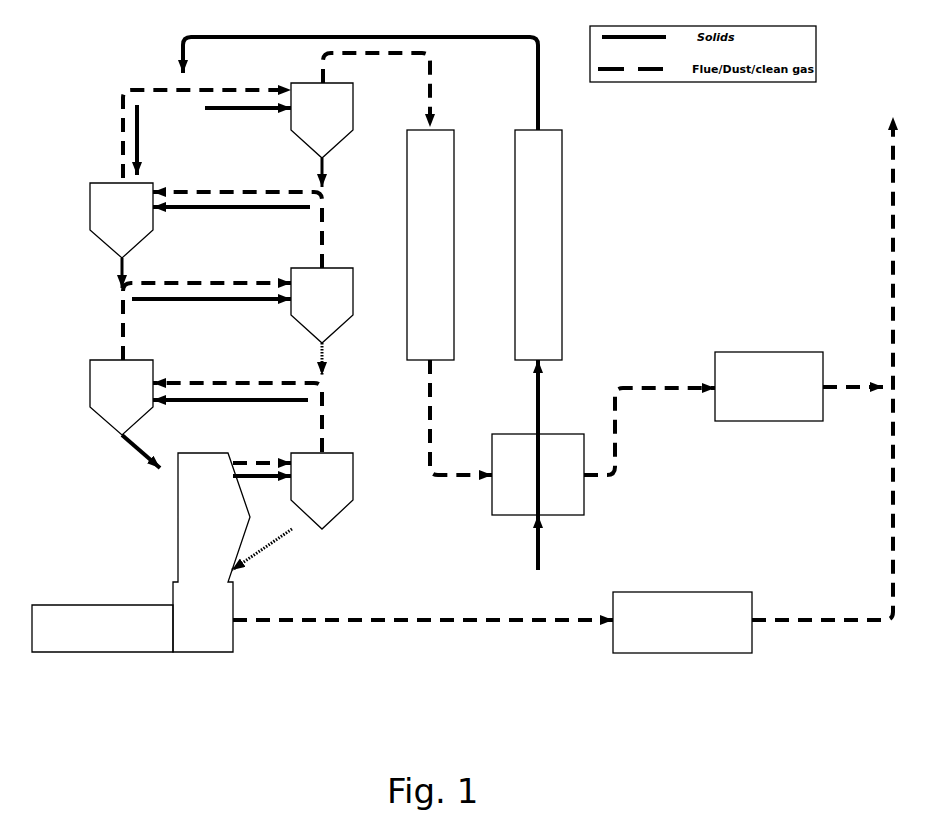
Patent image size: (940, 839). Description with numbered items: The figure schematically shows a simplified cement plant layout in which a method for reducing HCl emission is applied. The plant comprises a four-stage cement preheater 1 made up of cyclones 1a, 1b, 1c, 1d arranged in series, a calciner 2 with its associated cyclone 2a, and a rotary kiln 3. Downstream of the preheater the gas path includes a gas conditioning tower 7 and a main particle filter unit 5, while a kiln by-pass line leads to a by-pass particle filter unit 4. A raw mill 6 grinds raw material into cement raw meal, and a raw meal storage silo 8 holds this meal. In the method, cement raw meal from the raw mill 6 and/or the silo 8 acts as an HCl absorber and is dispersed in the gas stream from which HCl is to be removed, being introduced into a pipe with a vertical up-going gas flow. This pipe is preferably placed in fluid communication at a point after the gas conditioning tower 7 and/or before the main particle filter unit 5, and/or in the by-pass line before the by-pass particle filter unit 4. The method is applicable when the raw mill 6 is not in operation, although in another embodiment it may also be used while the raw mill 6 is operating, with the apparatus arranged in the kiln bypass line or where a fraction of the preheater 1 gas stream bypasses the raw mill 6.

The preheater 1 is at (88, 78).
The cyclone 1a is at (322, 120).
The cyclone 1b is at (121, 220).
The cyclone 1c is at (322, 305).
The cyclone 1d is at (121, 397).
The calciner 2 is at (211, 552).
The cyclone 2a is at (322, 491).
The rotary kiln 3 is at (102, 628).
The by-pass particle filter unit 4 is at (682, 622).
The main particle filter unit 5 is at (769, 386).
The raw mill 6 is at (538, 474).
The gas conditioning tower 7 is at (430, 245).
The raw meal storage silo 8 is at (538, 245).